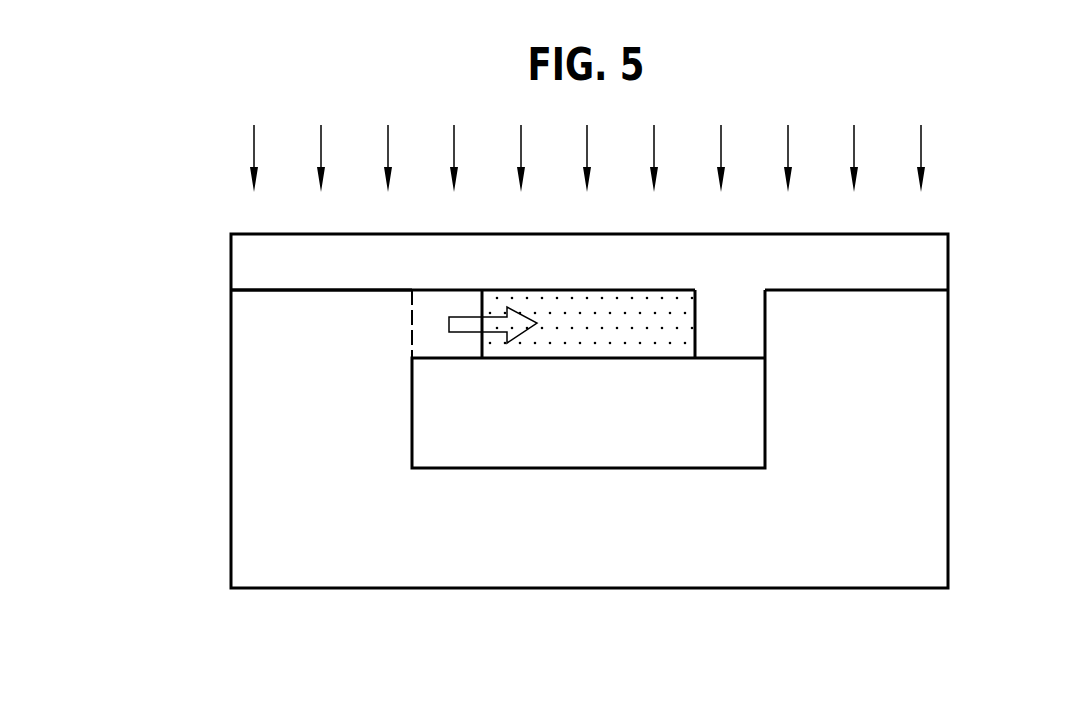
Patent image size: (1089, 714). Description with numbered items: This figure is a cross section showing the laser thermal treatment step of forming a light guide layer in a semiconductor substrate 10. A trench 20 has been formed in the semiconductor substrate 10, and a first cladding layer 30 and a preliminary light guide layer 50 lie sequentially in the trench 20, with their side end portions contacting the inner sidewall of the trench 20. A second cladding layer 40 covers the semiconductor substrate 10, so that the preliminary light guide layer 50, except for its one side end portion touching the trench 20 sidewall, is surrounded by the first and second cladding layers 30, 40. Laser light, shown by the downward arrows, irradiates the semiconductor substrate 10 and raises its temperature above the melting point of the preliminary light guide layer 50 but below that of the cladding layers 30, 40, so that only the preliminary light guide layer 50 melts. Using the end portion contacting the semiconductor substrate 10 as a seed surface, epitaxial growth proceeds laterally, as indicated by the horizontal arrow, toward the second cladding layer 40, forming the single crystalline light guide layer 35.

The semiconductor substrate 10 is at (366, 568).
The trench 20 is at (412, 418).
The first cladding layer 30 is at (560, 438).
The light guide layer 35 is at (457, 342).
The second cladding layer 40 is at (922, 266).
The preliminary light guide layer 50 is at (675, 327).